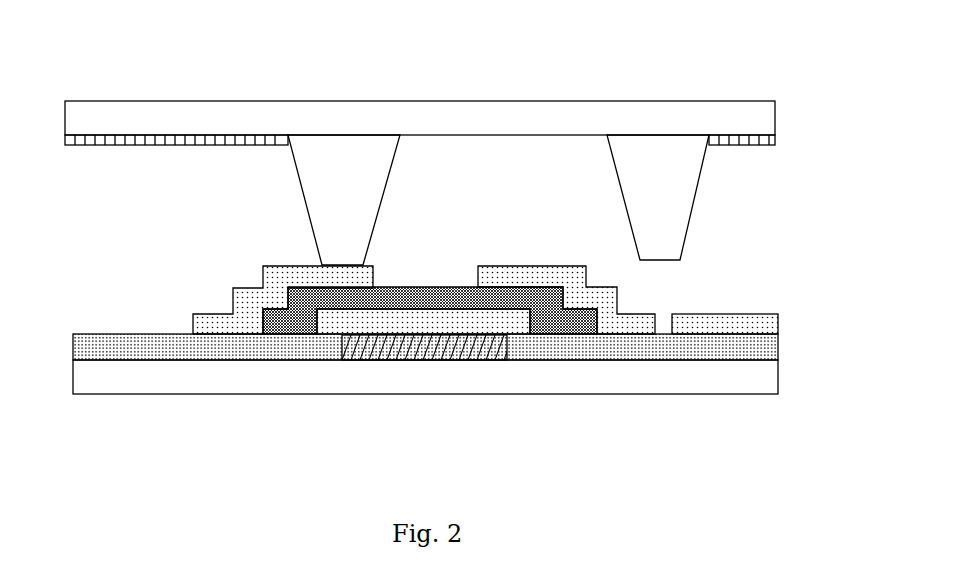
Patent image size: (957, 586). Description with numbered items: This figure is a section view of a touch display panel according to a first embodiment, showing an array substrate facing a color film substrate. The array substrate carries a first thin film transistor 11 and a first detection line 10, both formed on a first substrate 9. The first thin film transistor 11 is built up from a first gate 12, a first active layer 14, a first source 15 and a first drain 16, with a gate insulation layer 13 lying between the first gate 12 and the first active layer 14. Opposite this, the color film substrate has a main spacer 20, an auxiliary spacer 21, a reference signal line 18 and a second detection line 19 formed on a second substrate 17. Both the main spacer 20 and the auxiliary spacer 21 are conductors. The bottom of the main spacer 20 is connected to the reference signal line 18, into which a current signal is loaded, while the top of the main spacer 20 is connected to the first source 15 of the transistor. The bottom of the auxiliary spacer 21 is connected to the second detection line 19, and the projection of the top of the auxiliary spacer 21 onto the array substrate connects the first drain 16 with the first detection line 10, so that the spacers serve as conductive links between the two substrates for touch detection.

The first substrate 9 is at (760, 380).
The first detection line 10 is at (732, 322).
The first thin film transistor 11 is at (188, 287).
The first gate 12 is at (437, 348).
The gate insulation layer 13 is at (755, 352).
The first active layer 14 is at (295, 322).
The first source 15 is at (243, 320).
The first drain 16 is at (610, 314).
The second substrate 17 is at (758, 118).
The reference signal line 18 is at (183, 142).
The second detection line 19 is at (763, 143).
The main spacer 20 is at (345, 180).
The auxiliary spacer 21 is at (655, 173).